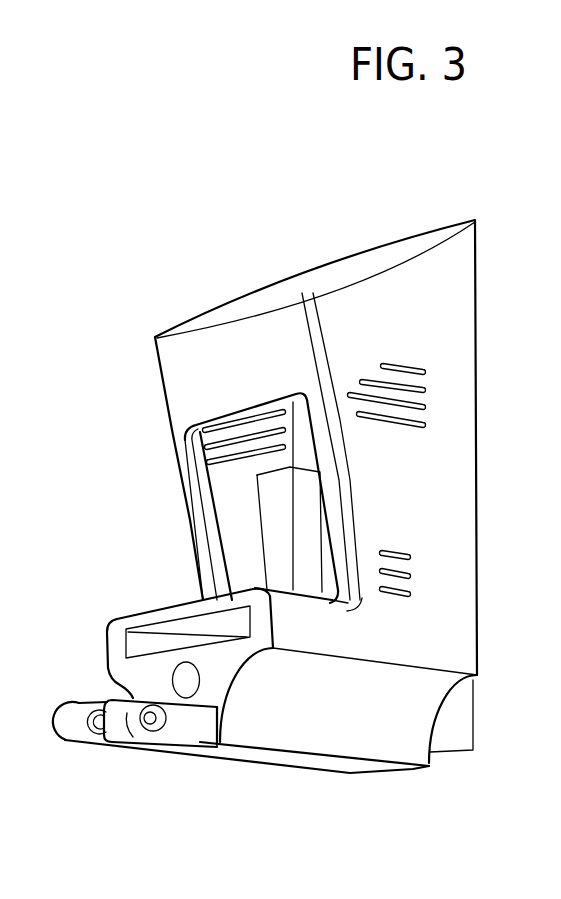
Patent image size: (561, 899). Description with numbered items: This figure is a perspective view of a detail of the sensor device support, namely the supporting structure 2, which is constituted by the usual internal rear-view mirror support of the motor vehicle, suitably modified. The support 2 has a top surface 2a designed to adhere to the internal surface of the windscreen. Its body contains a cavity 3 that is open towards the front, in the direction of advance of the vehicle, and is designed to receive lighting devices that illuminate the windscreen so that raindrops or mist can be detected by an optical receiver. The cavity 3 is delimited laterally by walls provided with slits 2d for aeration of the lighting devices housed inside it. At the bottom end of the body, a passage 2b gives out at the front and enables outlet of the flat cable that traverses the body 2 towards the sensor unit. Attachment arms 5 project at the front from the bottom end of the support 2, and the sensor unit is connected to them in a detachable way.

The support 2 is at (233, 266).
The top surface 2a is at (336, 272).
The passage 2b is at (165, 642).
The slits 2d is at (423, 404).
The cavity 3 is at (237, 478).
The attachment arms 5 is at (133, 737).